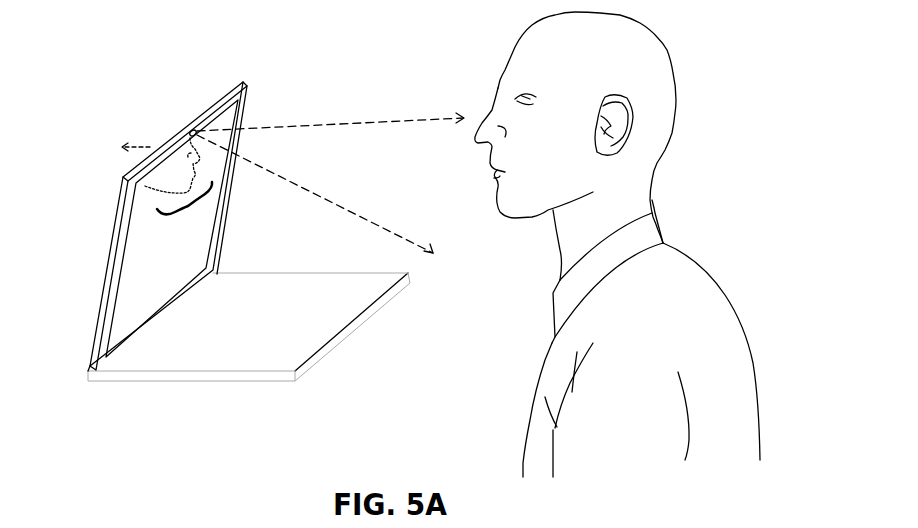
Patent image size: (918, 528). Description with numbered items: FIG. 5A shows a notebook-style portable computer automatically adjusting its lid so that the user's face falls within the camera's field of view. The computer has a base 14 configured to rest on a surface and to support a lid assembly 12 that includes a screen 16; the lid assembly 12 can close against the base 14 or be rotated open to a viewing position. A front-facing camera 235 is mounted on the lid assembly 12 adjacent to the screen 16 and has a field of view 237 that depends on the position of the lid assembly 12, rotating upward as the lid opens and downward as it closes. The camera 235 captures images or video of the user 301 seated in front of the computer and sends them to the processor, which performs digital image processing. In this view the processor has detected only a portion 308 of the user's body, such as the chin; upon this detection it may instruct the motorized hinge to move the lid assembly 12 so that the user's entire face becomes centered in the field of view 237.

The lid assembly 12 is at (226, 265).
The base 14 is at (137, 377).
The screen 16 is at (143, 240).
The front-facing camera 235 is at (188, 131).
The field of view 237 is at (351, 128).
The user 301 is at (680, 52).
The portion of the user's body 308 is at (178, 190).